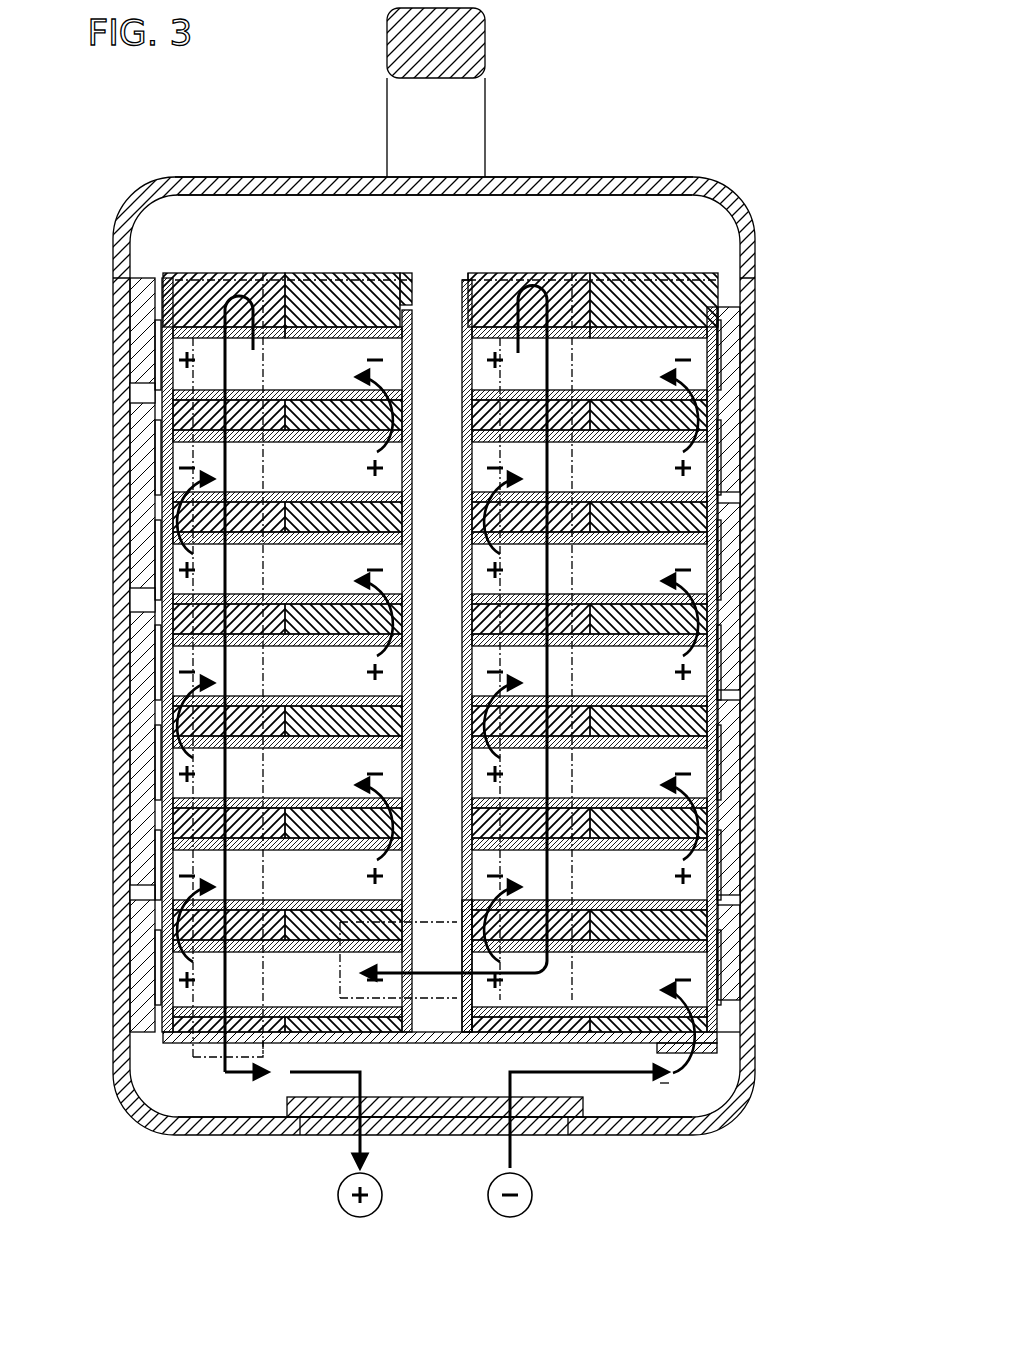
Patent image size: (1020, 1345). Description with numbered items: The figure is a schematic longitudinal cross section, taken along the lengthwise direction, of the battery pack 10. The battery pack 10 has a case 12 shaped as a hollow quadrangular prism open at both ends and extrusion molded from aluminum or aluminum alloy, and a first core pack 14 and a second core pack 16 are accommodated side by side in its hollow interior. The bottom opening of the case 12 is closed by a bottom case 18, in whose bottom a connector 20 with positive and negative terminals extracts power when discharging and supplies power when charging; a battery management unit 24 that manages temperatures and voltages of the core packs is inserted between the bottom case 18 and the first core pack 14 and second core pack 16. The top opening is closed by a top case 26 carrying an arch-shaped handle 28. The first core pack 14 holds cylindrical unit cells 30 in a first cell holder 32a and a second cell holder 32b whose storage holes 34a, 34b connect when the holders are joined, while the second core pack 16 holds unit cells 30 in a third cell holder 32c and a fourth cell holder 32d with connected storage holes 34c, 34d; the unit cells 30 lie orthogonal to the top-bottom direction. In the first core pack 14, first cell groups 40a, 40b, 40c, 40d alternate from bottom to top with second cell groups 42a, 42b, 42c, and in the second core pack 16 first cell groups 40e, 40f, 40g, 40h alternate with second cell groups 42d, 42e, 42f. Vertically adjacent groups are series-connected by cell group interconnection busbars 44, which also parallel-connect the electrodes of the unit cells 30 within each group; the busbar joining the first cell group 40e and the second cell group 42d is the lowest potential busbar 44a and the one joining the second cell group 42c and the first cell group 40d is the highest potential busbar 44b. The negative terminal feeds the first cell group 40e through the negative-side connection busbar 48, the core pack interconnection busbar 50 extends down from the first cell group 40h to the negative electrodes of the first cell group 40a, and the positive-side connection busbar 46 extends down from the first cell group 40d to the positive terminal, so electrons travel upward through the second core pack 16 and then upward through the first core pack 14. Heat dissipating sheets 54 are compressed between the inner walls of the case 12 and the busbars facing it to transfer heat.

The battery pack 10 is at (699, 57).
The case 12 is at (757, 292).
The first core pack 14 is at (325, 222).
The second core pack 16 is at (698, 268).
The bottom case 18 is at (750, 1083).
The connector 20 is at (438, 1130).
The battery management unit 24 is at (395, 1045).
The top case 26 is at (545, 182).
The handle 28 is at (480, 38).
The unit cell 30 is at (170, 333).
The first cell holder 32a is at (220, 300).
The second cell holder 32b is at (343, 295).
The third cell holder 32c is at (537, 300).
The fourth cell holder 32d is at (664, 300).
The storage hole 34a is at (178, 332).
The storage hole 34b is at (300, 332).
The storage hole 34c is at (500, 332).
The storage hole 34d is at (628, 332).
The first cell group 40a is at (158, 1012).
The first cell group 40b is at (158, 812).
The first cell group 40c is at (158, 578).
The first cell group 40d is at (158, 405).
The first cell group 40e is at (720, 990).
The first cell group 40f is at (720, 760).
The first cell group 40g is at (720, 570).
The first cell group 40h is at (720, 352).
The second cell group 42a is at (158, 902).
The second cell group 42b is at (158, 712).
The second cell group 42c is at (158, 500).
The second cell group 42d is at (720, 873).
The second cell group 42e is at (720, 676).
The second cell group 42f is at (720, 473).
The cell group interconnection busbar 44 is at (165, 460).
The lowest potential busbar 44a is at (573, 902).
The highest potential busbar 44b is at (407, 318).
The positive-side connection busbar 46 is at (208, 1062).
The negative-side connection busbar 48 is at (742, 1045).
The core pack interconnection busbar 50 is at (340, 975).
The heat dissipating sheet 54 is at (145, 368).